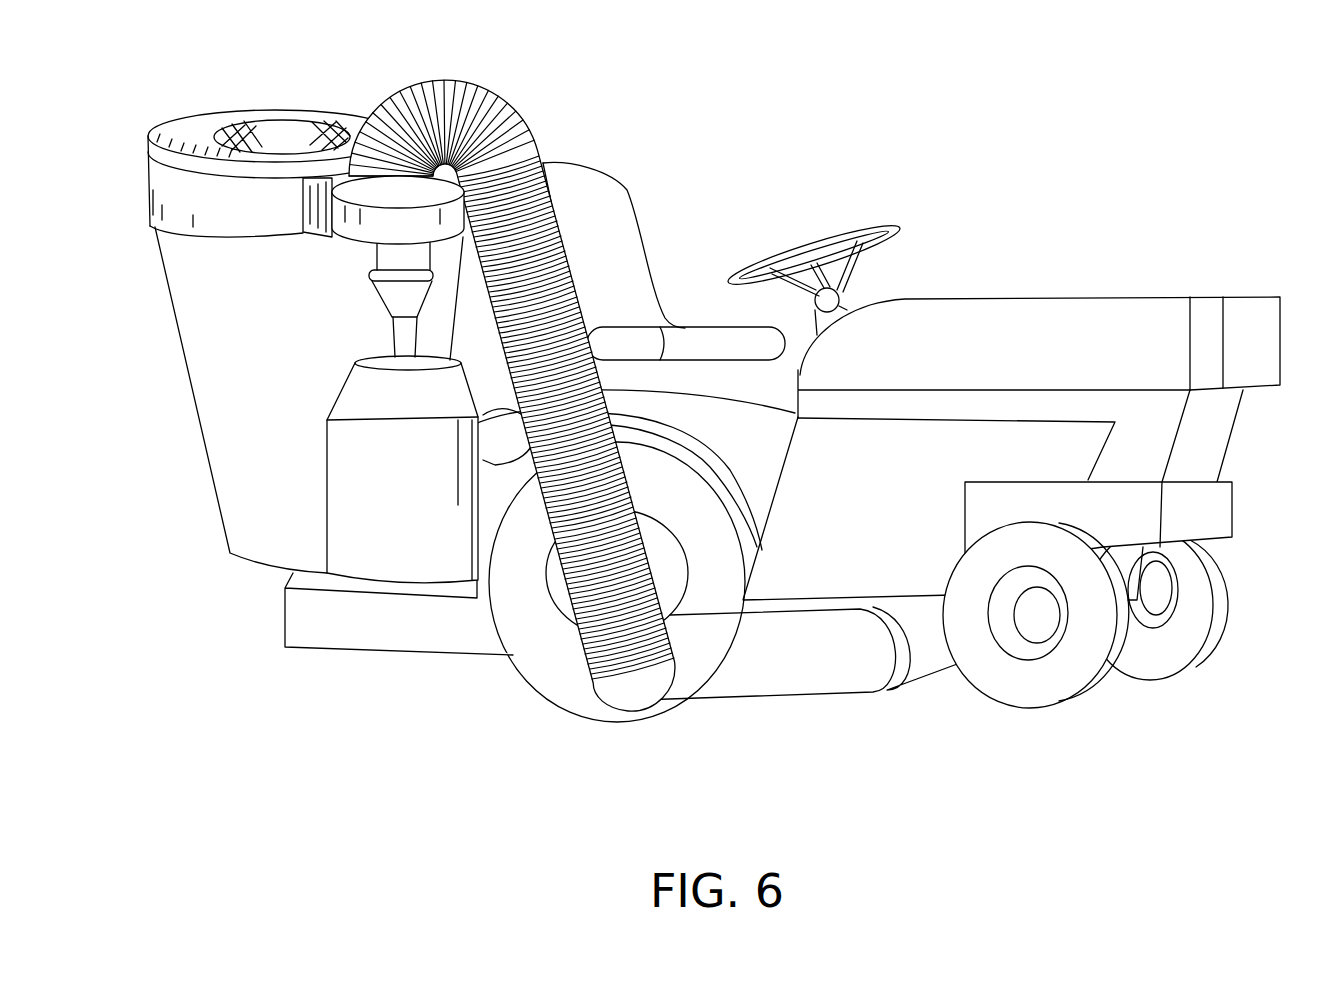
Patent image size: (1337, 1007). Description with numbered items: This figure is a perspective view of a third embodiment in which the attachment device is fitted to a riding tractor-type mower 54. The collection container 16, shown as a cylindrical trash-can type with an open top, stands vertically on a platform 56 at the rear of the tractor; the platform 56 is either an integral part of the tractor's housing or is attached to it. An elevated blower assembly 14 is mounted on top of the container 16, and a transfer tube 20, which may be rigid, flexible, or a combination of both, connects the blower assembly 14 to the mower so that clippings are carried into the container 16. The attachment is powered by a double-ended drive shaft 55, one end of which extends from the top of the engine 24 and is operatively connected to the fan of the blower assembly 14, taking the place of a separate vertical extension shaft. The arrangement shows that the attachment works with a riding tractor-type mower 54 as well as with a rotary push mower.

The blower assembly 14 is at (363, 233).
The collection container 16 is at (268, 425).
The transfer tube 20 is at (503, 99).
The internal combustion engine 24 is at (376, 512).
The riding tractor-type mower 54 is at (958, 232).
The double-ended drive shaft 55 is at (398, 336).
The platform 56 is at (372, 633).